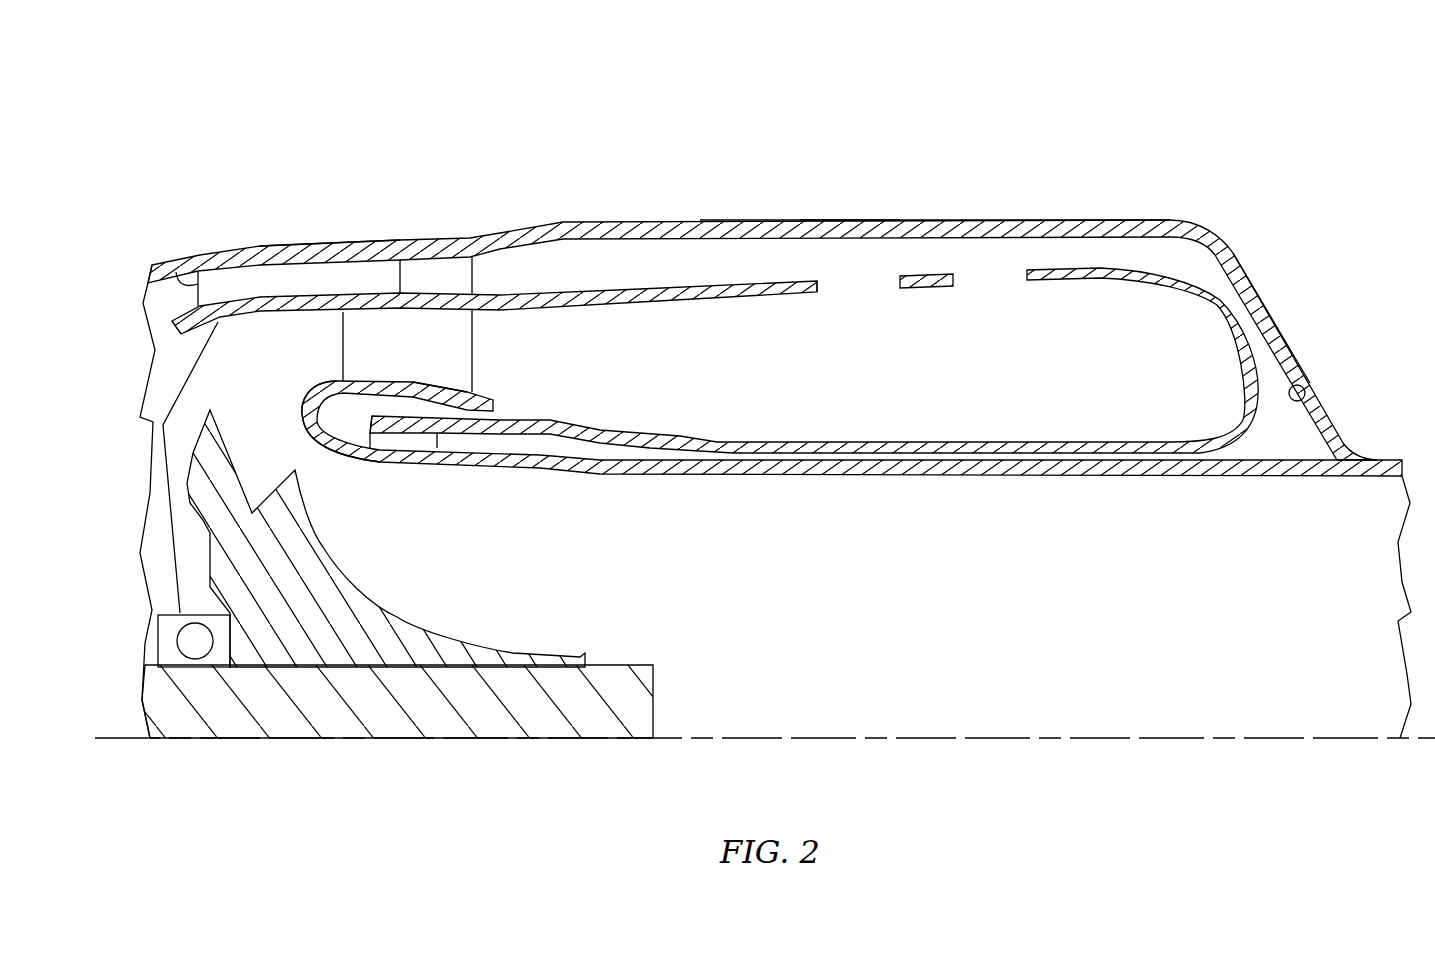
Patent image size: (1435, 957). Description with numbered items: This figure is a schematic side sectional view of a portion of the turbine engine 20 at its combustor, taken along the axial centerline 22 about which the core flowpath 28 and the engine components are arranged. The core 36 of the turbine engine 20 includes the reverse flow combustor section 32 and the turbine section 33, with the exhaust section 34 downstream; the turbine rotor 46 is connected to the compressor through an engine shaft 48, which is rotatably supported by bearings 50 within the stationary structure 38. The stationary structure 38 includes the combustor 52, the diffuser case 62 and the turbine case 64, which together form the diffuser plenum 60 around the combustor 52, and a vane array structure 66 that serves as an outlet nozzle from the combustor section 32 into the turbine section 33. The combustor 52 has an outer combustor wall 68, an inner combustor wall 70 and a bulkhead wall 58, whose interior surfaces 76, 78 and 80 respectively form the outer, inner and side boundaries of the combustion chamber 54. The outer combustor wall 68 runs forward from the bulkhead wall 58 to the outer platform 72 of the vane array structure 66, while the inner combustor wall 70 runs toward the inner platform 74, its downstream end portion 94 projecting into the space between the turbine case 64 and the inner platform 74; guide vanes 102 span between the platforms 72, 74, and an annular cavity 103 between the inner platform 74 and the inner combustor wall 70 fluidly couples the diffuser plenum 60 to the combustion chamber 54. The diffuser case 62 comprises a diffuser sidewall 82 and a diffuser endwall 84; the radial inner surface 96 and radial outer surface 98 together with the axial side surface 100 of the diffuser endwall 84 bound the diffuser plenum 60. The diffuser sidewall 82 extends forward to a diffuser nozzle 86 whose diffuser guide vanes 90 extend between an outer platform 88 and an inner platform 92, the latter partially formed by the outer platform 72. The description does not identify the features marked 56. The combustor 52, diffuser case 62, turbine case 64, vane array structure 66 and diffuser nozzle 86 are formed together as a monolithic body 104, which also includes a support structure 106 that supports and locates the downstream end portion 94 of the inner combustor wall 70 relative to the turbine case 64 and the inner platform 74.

The turbine engine 20 is at (150, 128).
The axial centerline 22 is at (110, 742).
The core flowpath 28 is at (816, 633).
The combustor section 32 is at (794, 202).
The turbine section 33 is at (168, 382).
The exhaust section 34 is at (1392, 436).
The core 36 is at (614, 190).
The stationary structure 38 is at (447, 222).
The turbine rotor 46 is at (424, 618).
The engine shaft 48 is at (653, 696).
The bearings 50 is at (158, 638).
The combustor 52 is at (696, 276).
The combustion chamber 54 is at (852, 393).
The openings 56 is at (866, 288).
The bulkhead wall 58 is at (1248, 337).
The diffuser plenum 60 is at (613, 278).
The diffuser case 62 is at (957, 220).
The turbine case 64 is at (843, 476).
The vane array structure 66 is at (325, 362).
The outer combustor wall 68 is at (748, 287).
The inner combustor wall 70 is at (747, 456).
The outer platform 72 is at (476, 258).
The inner platform 74 is at (452, 384).
The interior surface 76 is at (633, 312).
The interior surface 78 is at (608, 425).
The interior surface 80 is at (1243, 360).
The diffuser sidewall 82 is at (862, 230).
The diffuser endwall 84 is at (1262, 290).
The diffuser nozzle 86 is at (184, 300).
The outer platform 88 is at (325, 240).
The diffuser guide vanes 90 is at (181, 271).
The inner platform 92 is at (277, 313).
The downstream end portion 94 is at (414, 416).
The radial inner surface 96 is at (790, 242).
The radial outer surface 98 is at (570, 453).
The axial side surface 100 is at (1304, 386).
The guide vanes 102 is at (475, 338).
The cavity 103 is at (343, 417).
The monolithic body 104 is at (762, 302).
The support structure 106 is at (353, 440).